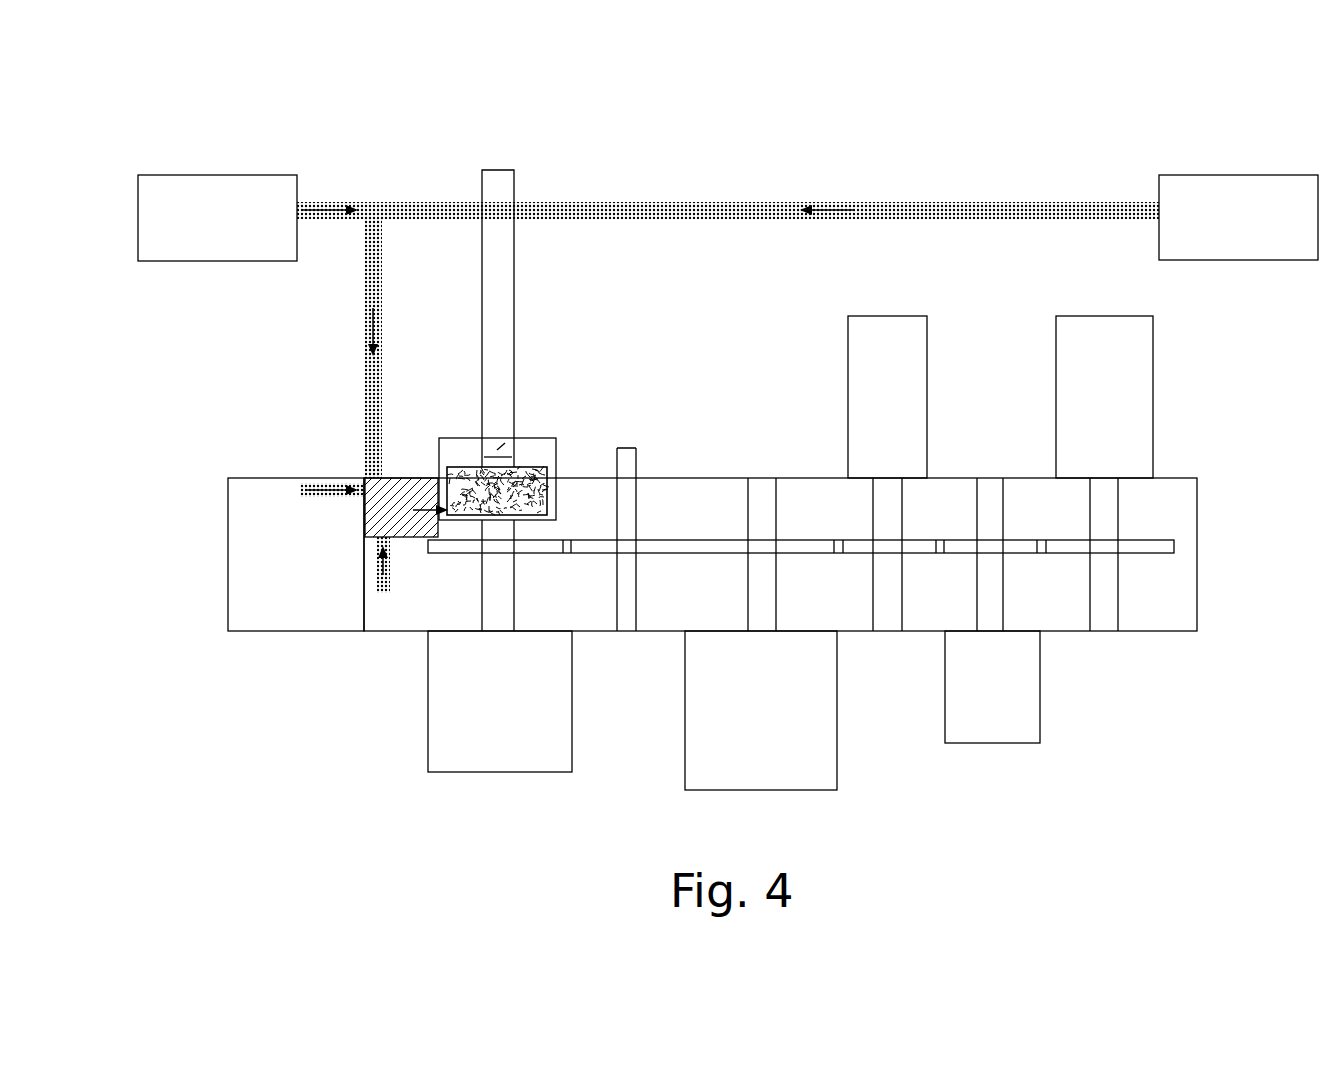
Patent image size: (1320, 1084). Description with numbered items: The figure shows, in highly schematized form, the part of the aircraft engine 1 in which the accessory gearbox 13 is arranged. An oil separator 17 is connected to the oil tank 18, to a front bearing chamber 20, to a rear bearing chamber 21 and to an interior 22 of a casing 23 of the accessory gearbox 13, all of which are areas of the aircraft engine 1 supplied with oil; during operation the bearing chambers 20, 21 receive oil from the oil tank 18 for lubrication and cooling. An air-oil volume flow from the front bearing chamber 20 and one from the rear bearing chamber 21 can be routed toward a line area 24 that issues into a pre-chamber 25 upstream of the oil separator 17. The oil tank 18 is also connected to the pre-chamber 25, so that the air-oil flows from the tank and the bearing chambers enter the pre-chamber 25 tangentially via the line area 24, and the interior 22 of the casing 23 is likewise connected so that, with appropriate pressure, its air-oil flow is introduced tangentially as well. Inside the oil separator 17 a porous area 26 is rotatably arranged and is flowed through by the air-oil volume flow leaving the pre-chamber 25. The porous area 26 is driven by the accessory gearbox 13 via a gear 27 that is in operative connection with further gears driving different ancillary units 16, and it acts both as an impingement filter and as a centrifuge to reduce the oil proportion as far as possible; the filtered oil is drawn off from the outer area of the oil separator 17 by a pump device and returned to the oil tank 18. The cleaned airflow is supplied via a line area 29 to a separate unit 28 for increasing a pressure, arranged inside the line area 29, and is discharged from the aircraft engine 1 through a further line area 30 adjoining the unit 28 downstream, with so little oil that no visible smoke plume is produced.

The aircraft engine 1 is at (113, 266).
The accessory gearbox 13 is at (1080, 652).
The ancillary units 16 is at (981, 752).
The oil separator 17 is at (570, 426).
The oil tank 18 is at (242, 594).
The front bearing chamber 20 is at (230, 190).
The rear bearing chamber 21 is at (1230, 203).
The interior 22 is at (1183, 513).
The casing 23 is at (1198, 542).
The line area 24 is at (365, 280).
The pre-chamber 25 is at (403, 477).
The porous area 26 is at (557, 492).
The gear 27 is at (462, 545).
The unit for increasing a pressure 28 is at (497, 448).
The line area 29 is at (482, 458).
The further line area 30 is at (513, 288).